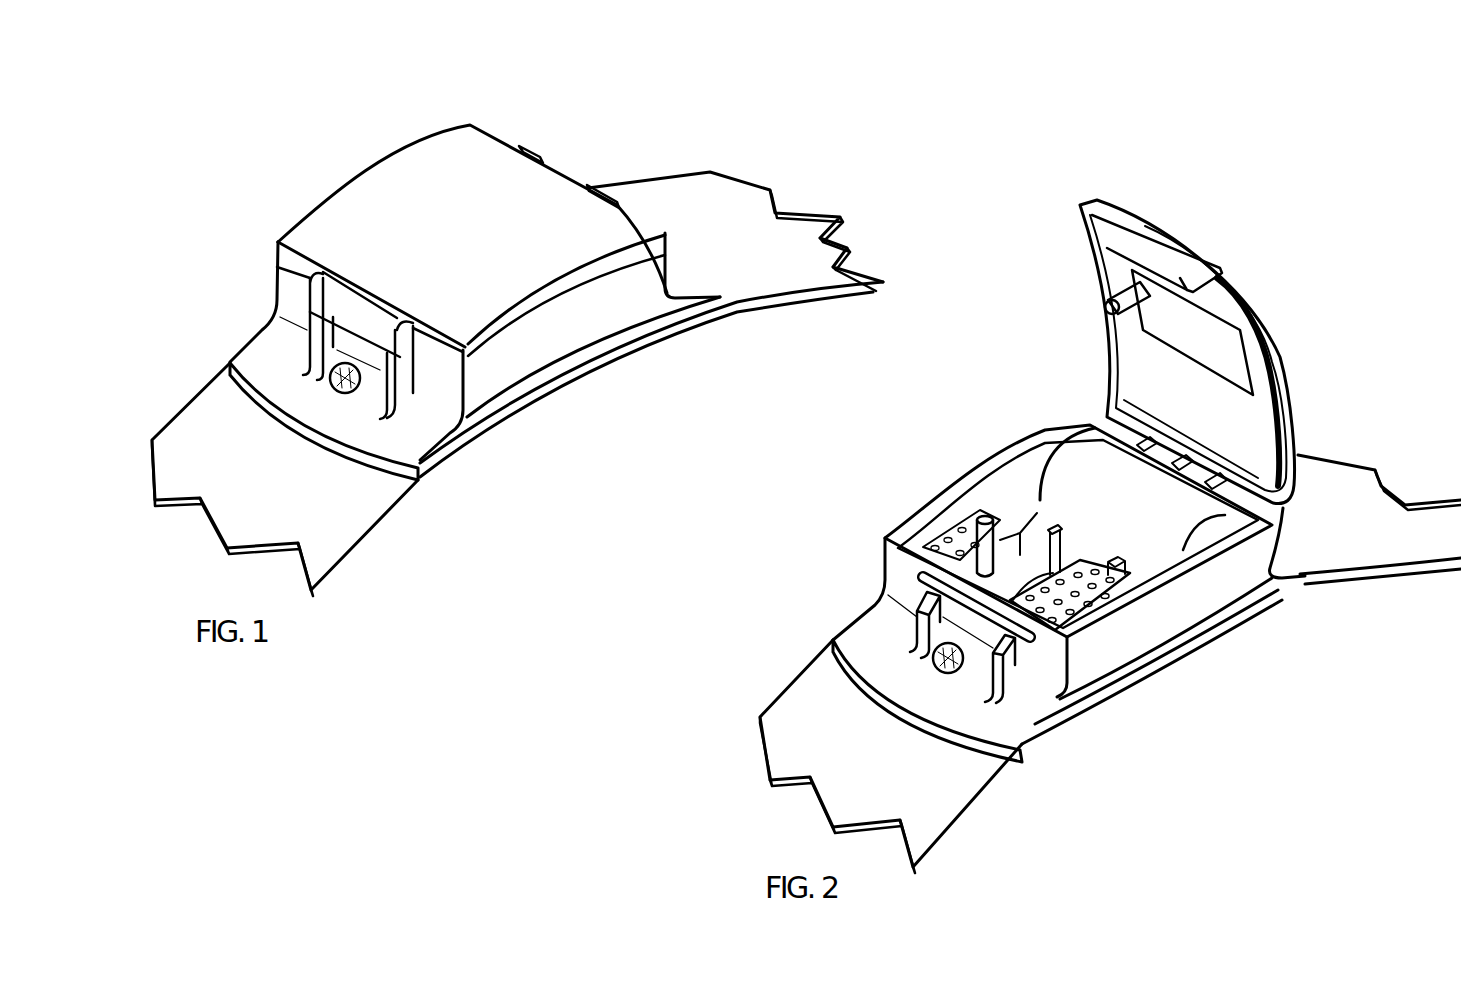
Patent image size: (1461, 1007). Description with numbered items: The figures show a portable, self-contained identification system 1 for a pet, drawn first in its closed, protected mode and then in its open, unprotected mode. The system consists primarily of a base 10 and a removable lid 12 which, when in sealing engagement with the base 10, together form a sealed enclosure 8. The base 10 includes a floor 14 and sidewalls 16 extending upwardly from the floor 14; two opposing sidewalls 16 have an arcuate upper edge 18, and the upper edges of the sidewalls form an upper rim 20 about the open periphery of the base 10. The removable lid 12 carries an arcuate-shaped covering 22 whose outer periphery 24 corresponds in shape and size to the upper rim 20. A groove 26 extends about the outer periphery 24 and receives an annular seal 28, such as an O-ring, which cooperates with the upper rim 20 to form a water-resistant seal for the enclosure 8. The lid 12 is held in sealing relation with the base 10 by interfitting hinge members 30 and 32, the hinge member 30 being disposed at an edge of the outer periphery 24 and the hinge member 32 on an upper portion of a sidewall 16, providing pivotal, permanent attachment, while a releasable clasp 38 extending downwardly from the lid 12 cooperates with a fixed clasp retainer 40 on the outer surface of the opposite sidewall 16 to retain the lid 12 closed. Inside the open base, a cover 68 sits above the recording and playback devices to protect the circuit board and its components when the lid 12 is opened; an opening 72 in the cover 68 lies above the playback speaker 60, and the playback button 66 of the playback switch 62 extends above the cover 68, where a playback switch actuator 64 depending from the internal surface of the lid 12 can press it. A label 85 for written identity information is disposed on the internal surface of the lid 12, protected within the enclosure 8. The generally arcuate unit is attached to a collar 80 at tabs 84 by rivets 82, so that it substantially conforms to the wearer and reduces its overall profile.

In FIG. 1, the identification system 1 is at (283, 128).
In FIG. 2, the identification system 1 is at (1333, 180).
In FIG. 2, the sealed enclosure 8 is at (1062, 447).
In FIG. 1, the base 10 is at (543, 370).
In FIG. 2, the base 10 is at (1160, 650).
In FIG. 1, the removable lid 12 is at (297, 235).
In FIG. 2, the removable lid 12 is at (1278, 357).
In FIG. 2, the floor 14 is at (1030, 505).
In FIG. 1, the sidewalls 16 is at (286, 290).
In FIG. 2, the sidewalls 16 is at (1097, 440).
In FIG. 2, the arcuate upper edge 18 is at (1183, 553).
In FIG. 2, the upper rim 20 is at (888, 538).
In FIG. 1, the arcuate-shaped covering 22 is at (418, 152).
In FIG. 2, the arcuate-shaped covering 22 is at (1278, 422).
In FIG. 2, the outer periphery 24 is at (1253, 327).
In FIG. 2, the groove 26 is at (1100, 282).
In FIG. 2, the annular seal 28 is at (1222, 297).
In FIG. 1, the hinge member 30 is at (565, 168).
In FIG. 2, the hinge member 30 is at (1190, 462).
In FIG. 1, the hinge member 32 is at (528, 147).
In FIG. 2, the hinge member 32 is at (1240, 464).
In FIG. 2, the releasable clasp 38 is at (1152, 243).
In FIG. 2, the clasp retainer 40 is at (915, 632).
In FIG. 2, the playback speaker 60 is at (1007, 472).
In FIG. 2, the playback switch 62 is at (950, 505).
In FIG. 2, the playback switch actuator 64 is at (1104, 310).
In FIG. 2, the playback button 66 is at (980, 520).
In FIG. 2, the cover 68 is at (1028, 630).
In FIG. 2, the opening 72 is at (1100, 580).
In FIG. 1, the collar 80 is at (362, 512).
In FIG. 2, the collar 80 is at (945, 815).
In FIG. 1, the rivets 82 is at (334, 385).
In FIG. 2, the rivets 82 is at (940, 668).
In FIG. 1, the tabs 84 is at (252, 355).
In FIG. 2, the tabs 84 is at (1308, 580).
In FIG. 2, the label 85 is at (1210, 353).